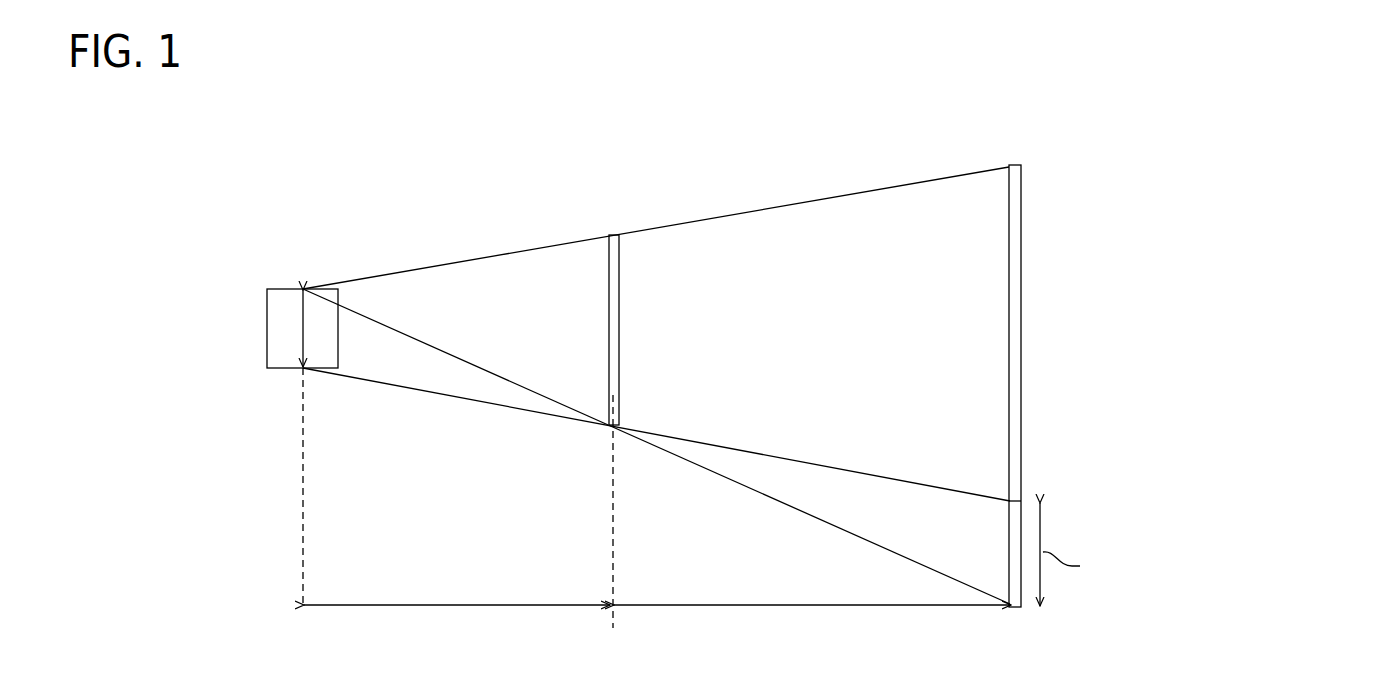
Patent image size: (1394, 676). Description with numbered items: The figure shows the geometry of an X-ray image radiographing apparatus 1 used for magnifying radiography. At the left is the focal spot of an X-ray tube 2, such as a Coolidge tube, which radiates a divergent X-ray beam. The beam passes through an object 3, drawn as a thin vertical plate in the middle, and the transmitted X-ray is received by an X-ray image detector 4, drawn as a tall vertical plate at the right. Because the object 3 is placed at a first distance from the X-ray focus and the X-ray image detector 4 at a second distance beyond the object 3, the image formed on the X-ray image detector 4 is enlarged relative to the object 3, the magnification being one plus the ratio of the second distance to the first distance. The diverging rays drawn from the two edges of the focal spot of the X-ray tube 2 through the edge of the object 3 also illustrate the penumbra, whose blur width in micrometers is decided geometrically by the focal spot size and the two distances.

The X-ray image radiographing apparatus 1 is at (706, 160).
The X-ray tube 2 is at (265, 331).
The object 3 is at (609, 325).
The X-ray image detector 4 is at (1008, 329).